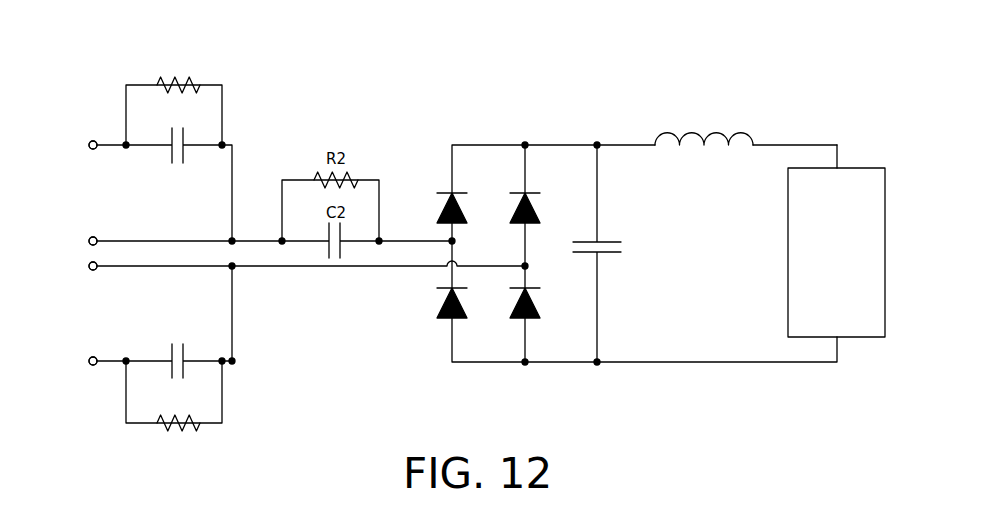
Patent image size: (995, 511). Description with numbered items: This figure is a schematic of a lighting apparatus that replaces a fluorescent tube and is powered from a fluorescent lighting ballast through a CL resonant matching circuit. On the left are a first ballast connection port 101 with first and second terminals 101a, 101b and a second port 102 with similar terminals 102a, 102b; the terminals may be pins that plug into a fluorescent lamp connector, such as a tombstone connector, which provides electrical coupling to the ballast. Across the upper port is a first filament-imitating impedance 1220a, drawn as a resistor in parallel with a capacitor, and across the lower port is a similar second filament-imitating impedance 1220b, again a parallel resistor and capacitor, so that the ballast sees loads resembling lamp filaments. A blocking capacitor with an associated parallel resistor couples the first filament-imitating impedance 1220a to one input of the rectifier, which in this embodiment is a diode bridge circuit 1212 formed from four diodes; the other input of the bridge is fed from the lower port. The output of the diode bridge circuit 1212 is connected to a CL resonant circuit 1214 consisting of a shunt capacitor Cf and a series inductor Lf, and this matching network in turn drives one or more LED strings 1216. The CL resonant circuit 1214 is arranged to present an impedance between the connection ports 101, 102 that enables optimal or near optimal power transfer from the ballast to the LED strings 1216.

The ballast connection port 101 is at (82, 145).
The first terminal 101a is at (101, 162).
The second terminal 101b is at (102, 223).
The second port 102 is at (82, 266).
The terminal 102a is at (97, 277).
The terminal 102b is at (97, 350).
The first RC input network 1220a is at (260, 77).
The second RC input network 1220b is at (235, 440).
The diode bridge circuit 1212 is at (500, 123).
The CL resonant circuit 1214 is at (740, 115).
The LED strings 1216 is at (788, 252).